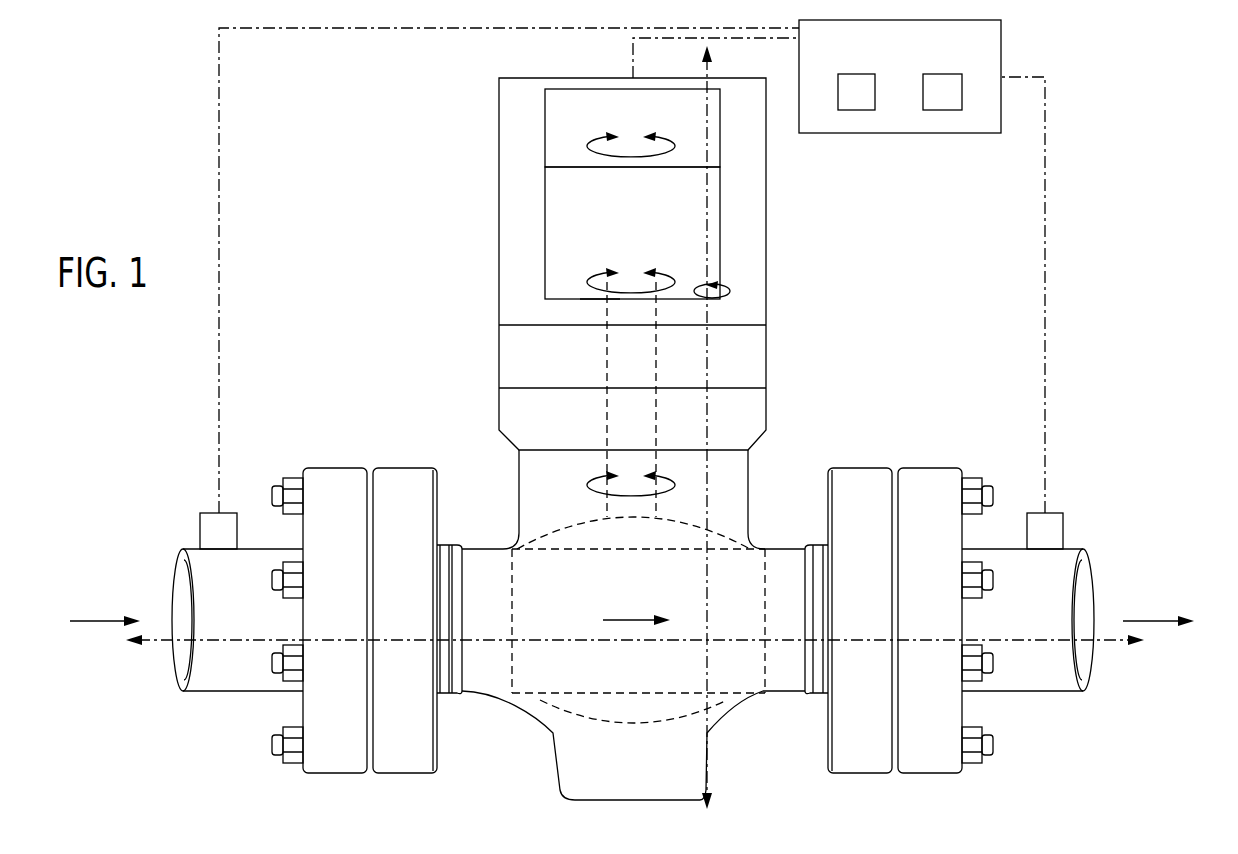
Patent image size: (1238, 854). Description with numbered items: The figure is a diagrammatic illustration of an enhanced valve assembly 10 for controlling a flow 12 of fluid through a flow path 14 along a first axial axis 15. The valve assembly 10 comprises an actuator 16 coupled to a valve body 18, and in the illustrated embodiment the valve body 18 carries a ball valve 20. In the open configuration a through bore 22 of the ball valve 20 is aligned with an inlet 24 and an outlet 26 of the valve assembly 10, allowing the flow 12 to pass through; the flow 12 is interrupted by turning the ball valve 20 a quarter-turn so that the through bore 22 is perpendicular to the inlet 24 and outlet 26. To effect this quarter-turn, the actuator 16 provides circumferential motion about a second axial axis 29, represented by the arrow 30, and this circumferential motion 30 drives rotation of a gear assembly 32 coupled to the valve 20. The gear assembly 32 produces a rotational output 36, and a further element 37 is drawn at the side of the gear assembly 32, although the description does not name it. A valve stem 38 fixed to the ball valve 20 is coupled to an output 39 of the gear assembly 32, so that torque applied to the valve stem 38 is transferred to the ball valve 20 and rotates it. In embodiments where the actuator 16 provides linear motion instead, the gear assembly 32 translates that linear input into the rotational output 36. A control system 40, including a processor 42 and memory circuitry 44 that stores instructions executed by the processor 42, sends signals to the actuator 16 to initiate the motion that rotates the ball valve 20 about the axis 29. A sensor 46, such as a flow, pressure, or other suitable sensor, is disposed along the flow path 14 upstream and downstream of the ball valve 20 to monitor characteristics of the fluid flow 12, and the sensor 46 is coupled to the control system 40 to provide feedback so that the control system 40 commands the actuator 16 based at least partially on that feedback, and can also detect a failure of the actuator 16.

The valve assembly 10 is at (956, 268).
The flow 12 is at (97, 623).
The flow path 14 is at (175, 580).
The first axial axis 15 is at (158, 641).
The actuator 16 is at (720, 128).
The valve body 18 is at (766, 355).
The ball valve 20 is at (578, 720).
The through bore 22 is at (716, 657).
The inlet 24 is at (405, 468).
The outlet 26 is at (866, 468).
The second axial axis 29 is at (709, 68).
The circumferential motion 30 is at (588, 145).
The gear assembly 32 is at (722, 255).
The rotational output 36 is at (588, 282).
The gear output 37 is at (728, 296).
The valve stem 38 is at (607, 372).
The output 39 is at (590, 312).
The control system 40 is at (1001, 25).
The processor 42 is at (846, 110).
The memory circuitry 44 is at (955, 110).
The sensor 46 is at (200, 531).